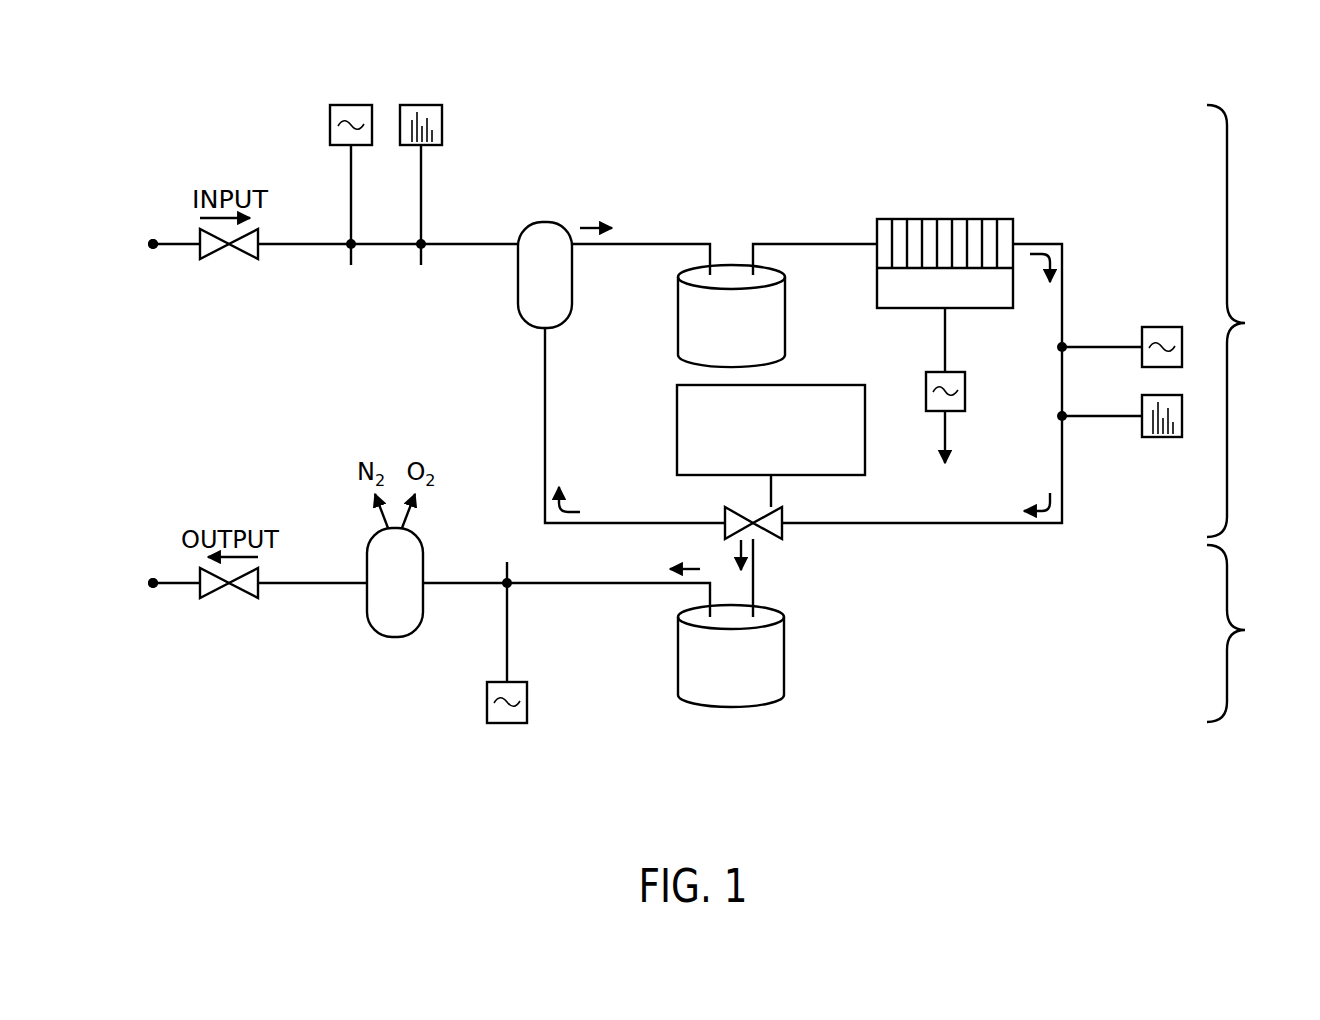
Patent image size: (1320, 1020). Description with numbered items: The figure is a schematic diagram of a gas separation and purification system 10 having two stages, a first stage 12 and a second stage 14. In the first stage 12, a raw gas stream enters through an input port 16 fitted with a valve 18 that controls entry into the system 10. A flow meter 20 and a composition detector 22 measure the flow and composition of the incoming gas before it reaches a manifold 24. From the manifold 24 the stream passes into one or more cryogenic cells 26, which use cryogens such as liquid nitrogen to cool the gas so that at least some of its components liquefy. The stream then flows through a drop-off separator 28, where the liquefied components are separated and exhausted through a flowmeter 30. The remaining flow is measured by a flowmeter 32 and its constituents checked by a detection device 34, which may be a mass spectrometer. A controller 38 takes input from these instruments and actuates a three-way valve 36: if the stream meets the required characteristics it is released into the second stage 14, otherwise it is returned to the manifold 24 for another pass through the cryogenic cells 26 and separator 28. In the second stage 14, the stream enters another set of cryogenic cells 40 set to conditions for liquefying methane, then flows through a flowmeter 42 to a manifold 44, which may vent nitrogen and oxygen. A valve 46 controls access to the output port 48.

The gas separation and purification system 10 is at (1092, 102).
The first stage 12 is at (1243, 321).
The second stage 14 is at (1243, 633).
The input port 16 is at (153, 251).
The valve 18 is at (217, 258).
The flow meter 20 is at (330, 117).
The composition detector 22 is at (442, 120).
The manifold 24 is at (539, 222).
The cryogenic cell 26 is at (786, 333).
The drop-off separator 28 is at (900, 219).
The flowmeter 30 is at (963, 411).
The flowmeter 32 is at (1150, 327).
The detection device 34 is at (1172, 437).
The three-way valve 36 is at (768, 530).
The controller 38 is at (677, 425).
The cryogenic cells 40 is at (785, 650).
The flowmeter 42 is at (510, 723).
The manifold 44 is at (395, 637).
The valve 46 is at (242, 597).
The output port 48 is at (153, 590).